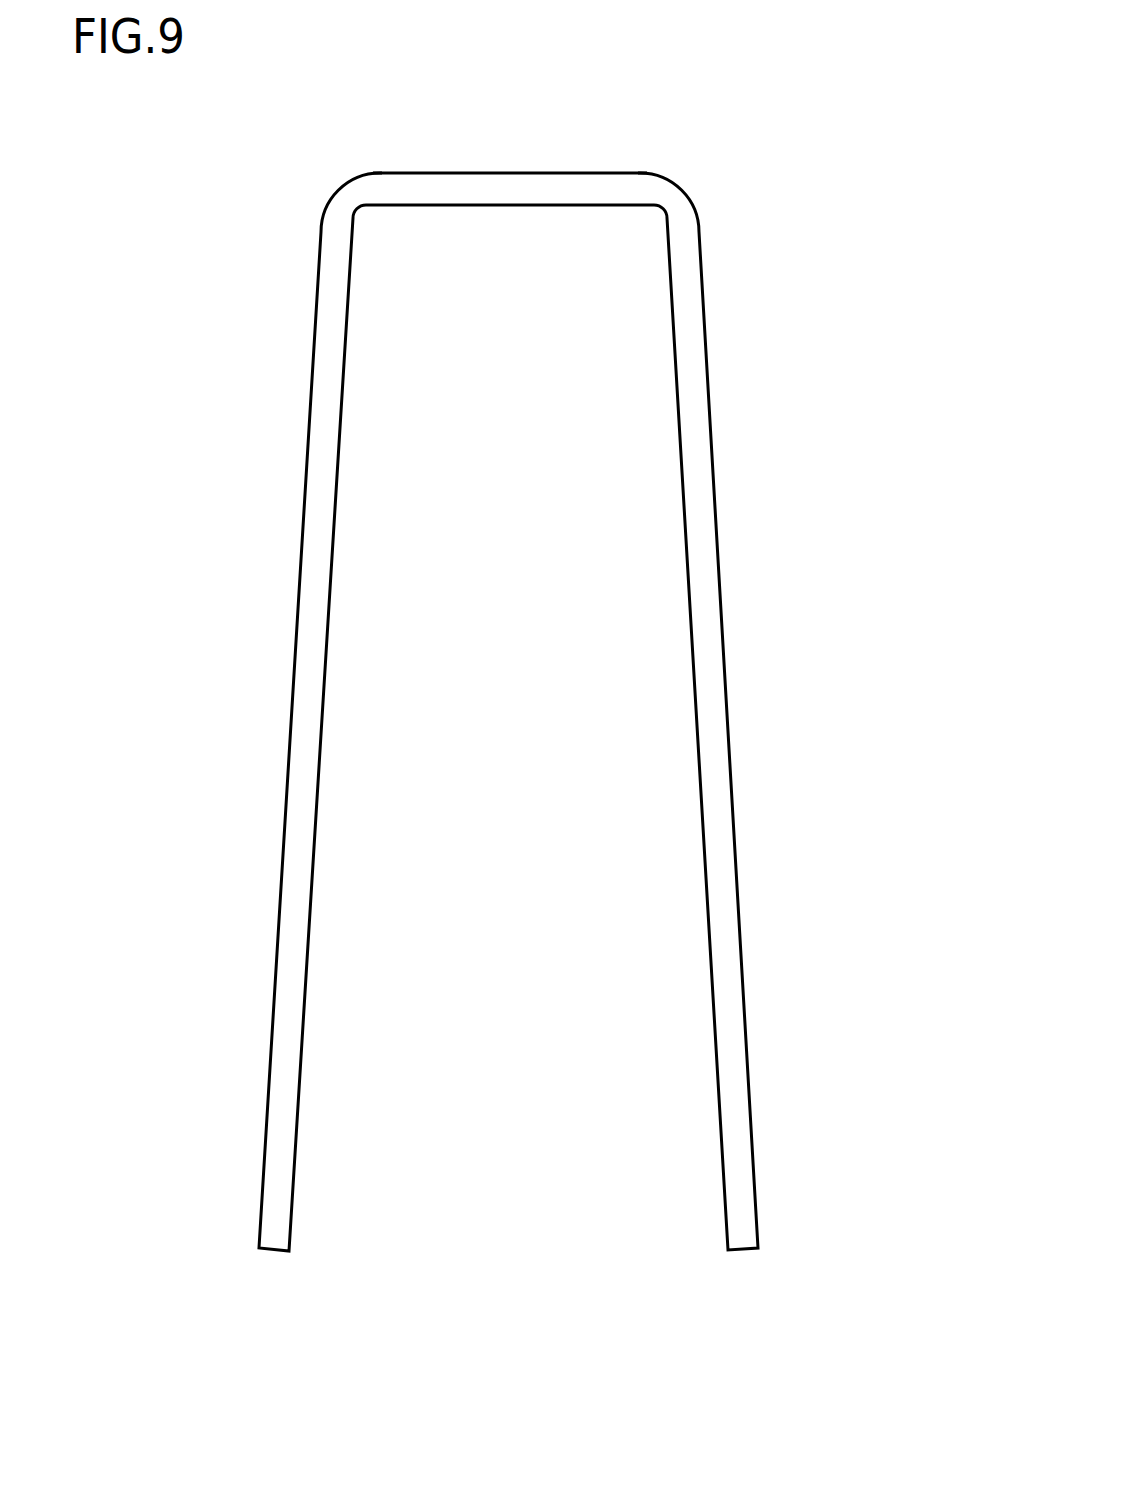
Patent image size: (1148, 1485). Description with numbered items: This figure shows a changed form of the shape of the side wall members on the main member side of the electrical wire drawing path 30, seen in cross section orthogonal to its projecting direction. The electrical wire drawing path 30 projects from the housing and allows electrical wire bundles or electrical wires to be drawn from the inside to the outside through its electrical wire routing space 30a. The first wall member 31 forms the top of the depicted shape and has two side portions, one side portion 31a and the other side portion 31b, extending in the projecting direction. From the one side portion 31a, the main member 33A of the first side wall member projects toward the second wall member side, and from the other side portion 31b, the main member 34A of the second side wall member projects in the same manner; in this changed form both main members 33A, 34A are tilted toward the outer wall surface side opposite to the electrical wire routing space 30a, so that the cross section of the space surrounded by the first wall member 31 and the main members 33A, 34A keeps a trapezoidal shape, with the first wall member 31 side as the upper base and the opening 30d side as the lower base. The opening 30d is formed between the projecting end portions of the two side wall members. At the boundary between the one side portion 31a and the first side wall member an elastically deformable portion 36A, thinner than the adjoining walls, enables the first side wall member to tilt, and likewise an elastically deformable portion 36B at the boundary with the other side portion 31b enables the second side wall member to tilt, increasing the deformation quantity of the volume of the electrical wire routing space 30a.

The electrical wire drawing path 30 is at (559, 84).
The electrical wire routing space 30a is at (593, 498).
The opening 30d is at (663, 1238).
The first wall member 31 is at (578, 205).
The one side portion 31a is at (373, 173).
The other side portion 31b is at (647, 173).
The main member 33A is at (317, 297).
The main member 34A is at (703, 297).
The elastically deformable portion 36A is at (338, 190).
The elastically deformable portion 36B is at (682, 190).